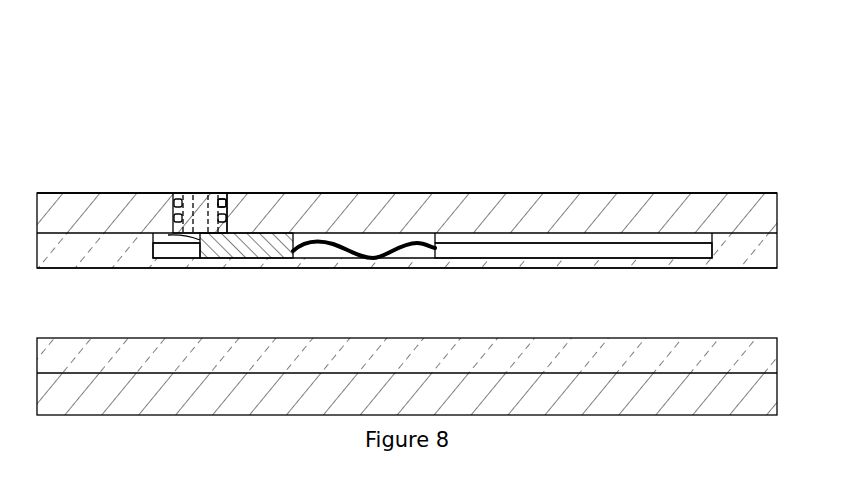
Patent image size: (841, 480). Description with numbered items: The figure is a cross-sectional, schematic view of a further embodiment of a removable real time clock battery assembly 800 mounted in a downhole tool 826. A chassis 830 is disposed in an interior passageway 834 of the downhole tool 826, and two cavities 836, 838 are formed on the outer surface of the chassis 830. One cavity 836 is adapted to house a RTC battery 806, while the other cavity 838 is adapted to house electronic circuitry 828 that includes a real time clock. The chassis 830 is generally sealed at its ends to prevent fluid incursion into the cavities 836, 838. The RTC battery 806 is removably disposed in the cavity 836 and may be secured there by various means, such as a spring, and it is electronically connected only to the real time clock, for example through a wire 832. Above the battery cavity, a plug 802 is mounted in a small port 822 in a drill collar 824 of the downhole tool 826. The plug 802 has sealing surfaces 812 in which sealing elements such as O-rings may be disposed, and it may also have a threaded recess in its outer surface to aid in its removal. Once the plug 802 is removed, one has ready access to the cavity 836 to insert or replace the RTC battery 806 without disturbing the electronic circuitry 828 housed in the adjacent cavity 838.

The removable RTC battery assembly 800 is at (118, 178).
The plug 802 is at (200, 243).
The RTC battery 806 is at (288, 238).
The sealing surfaces 812 is at (234, 192).
The small port 822 is at (217, 186).
The drill collar 824 is at (543, 210).
The downhole tool 826 is at (612, 157).
The electronic circuitry 828 is at (528, 252).
The chassis 830 is at (747, 253).
The wire 832 is at (415, 250).
The interior passageway 834 is at (565, 310).
The cavity 836 is at (162, 243).
The cavity 838 is at (680, 243).